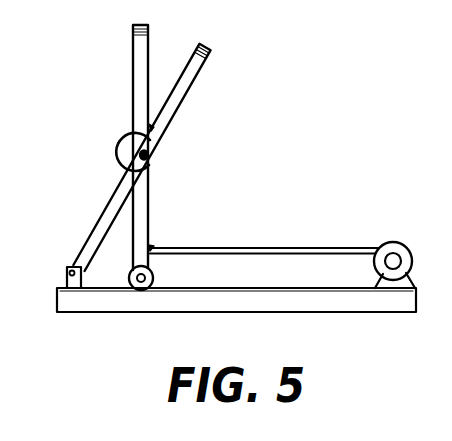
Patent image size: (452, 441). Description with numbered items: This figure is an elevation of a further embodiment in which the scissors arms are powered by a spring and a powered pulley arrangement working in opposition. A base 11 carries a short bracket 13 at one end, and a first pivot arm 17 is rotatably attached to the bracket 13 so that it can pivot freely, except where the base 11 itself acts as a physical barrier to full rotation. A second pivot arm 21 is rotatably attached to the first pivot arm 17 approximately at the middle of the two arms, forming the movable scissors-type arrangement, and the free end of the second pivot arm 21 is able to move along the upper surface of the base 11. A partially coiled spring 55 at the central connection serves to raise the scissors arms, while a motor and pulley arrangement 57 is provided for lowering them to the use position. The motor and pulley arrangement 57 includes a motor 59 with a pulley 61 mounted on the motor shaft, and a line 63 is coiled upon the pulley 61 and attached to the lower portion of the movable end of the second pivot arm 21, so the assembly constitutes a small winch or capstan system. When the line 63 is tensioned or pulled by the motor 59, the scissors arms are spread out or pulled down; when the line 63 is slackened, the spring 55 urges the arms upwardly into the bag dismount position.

The base 11 is at (374, 304).
The bracket 13 is at (67, 276).
The first pivot arm 17 is at (185, 80).
The second pivot arm 21 is at (138, 73).
The partially coiled spring 55 is at (118, 147).
The motor and pulley arrangement 57 is at (392, 220).
The motor 59 is at (408, 252).
The pulley 61 is at (389, 265).
The line 63 is at (220, 248).